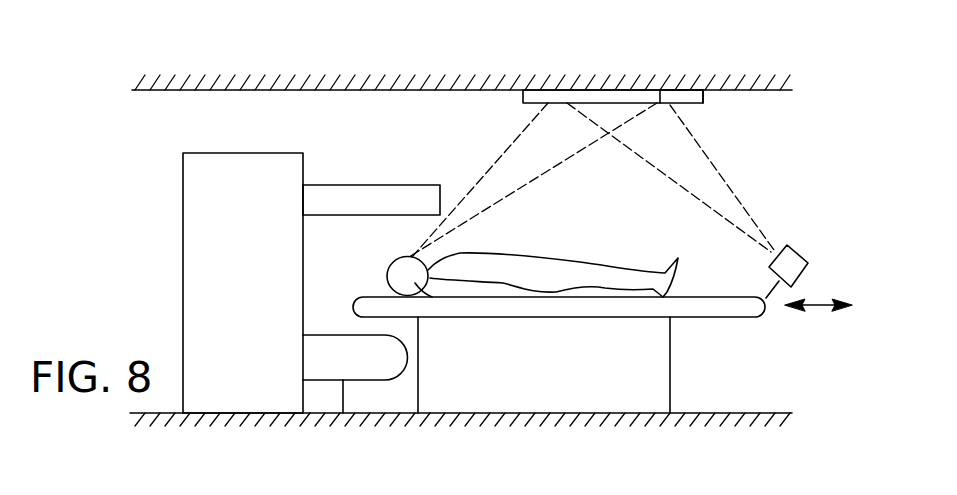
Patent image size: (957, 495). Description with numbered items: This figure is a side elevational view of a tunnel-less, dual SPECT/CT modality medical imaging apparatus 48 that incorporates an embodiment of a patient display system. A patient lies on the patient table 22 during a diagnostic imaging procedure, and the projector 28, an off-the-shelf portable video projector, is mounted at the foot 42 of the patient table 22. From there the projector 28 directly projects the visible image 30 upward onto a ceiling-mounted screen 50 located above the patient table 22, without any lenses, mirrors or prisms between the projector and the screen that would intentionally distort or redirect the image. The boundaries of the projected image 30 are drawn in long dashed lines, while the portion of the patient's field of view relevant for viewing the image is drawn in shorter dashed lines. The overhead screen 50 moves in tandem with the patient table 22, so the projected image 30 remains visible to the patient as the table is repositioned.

The patient table 22 is at (591, 317).
The projector 28 is at (807, 258).
The projected visual image 30 is at (567, 73).
The foot of the patient table 42 is at (745, 308).
The tunnel-less medical imaging SPECT/CT apparatus 48 is at (160, 252).
The ceiling-mounted screen 50 is at (689, 104).